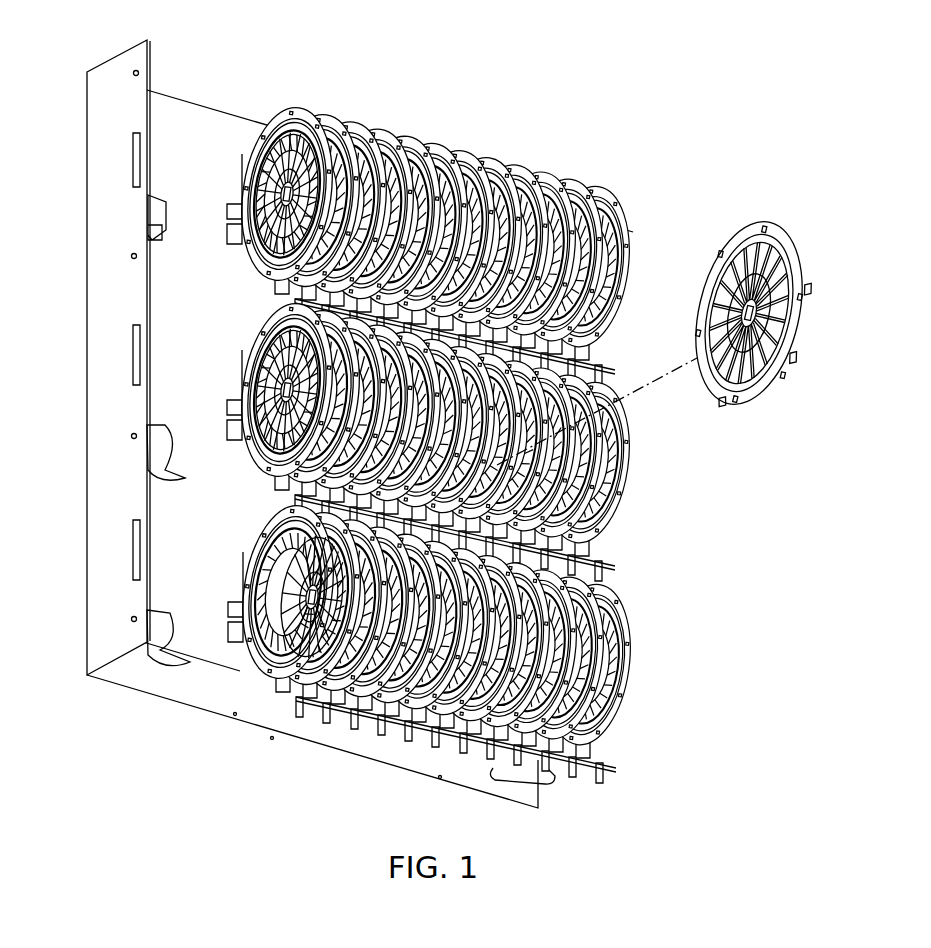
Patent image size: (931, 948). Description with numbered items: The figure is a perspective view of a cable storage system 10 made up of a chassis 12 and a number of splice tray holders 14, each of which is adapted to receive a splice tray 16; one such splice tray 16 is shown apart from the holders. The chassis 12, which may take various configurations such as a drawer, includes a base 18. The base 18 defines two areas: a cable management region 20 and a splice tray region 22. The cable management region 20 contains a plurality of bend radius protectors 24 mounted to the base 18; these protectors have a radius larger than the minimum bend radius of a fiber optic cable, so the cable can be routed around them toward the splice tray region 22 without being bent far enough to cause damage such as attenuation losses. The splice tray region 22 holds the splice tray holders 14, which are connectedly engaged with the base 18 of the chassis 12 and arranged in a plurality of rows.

The cable storage system 10 is at (694, 156).
The chassis 12 is at (184, 98).
The splice tray holder 14 is at (246, 667).
The splice tray 16 is at (789, 224).
The base 18 is at (180, 309).
The cable management region 20 is at (176, 410).
The splice tray region 22 is at (405, 765).
The bend radius protector 24 is at (165, 664).